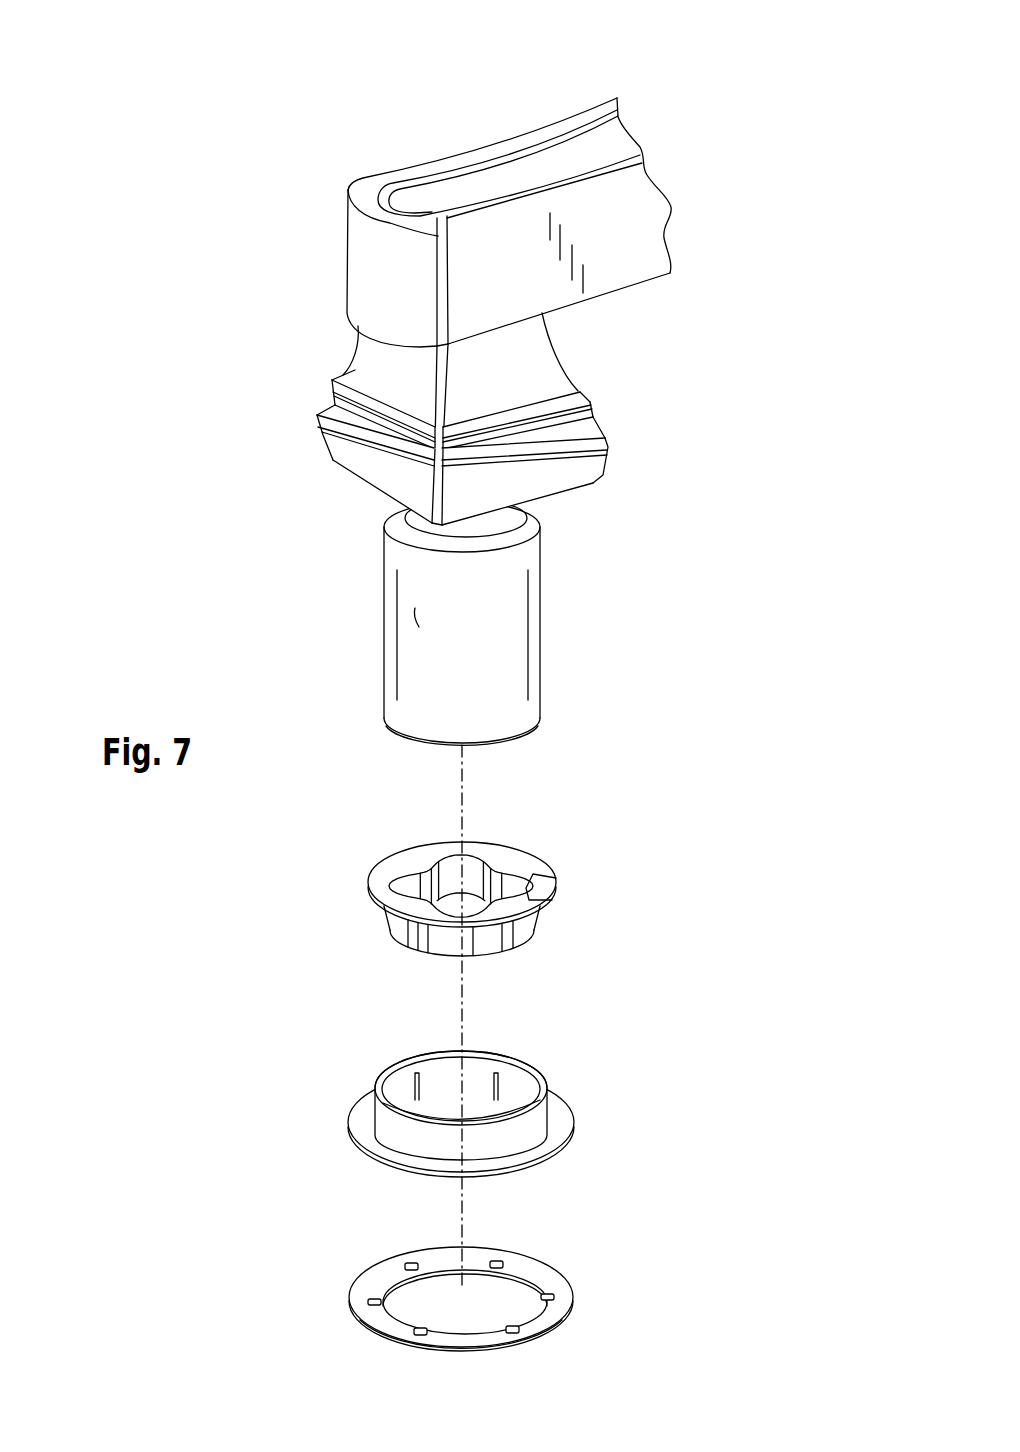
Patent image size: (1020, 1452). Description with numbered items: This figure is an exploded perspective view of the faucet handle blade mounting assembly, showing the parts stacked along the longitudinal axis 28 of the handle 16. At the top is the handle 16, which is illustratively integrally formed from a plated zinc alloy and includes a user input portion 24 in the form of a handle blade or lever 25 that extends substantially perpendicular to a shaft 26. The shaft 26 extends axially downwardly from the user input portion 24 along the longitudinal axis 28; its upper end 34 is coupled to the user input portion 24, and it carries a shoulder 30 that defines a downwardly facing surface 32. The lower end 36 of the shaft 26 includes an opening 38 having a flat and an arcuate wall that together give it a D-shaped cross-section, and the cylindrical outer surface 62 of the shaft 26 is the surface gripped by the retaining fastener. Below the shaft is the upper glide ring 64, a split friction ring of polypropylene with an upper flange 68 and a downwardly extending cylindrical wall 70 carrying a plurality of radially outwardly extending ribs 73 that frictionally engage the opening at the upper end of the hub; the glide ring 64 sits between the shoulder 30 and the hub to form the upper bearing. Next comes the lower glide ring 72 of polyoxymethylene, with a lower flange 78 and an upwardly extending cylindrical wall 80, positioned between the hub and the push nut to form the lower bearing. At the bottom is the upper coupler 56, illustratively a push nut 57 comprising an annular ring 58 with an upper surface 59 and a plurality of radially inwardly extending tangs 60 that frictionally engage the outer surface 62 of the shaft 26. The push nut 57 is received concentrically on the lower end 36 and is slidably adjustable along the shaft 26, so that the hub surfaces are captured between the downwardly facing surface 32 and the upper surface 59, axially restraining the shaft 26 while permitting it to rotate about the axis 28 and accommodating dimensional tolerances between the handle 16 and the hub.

The handle 16 is at (550, 112).
The user input portion 24 is at (620, 142).
The handle blade or lever 25 is at (647, 227).
The upper end 34 is at (342, 351).
The shoulder 30 is at (607, 445).
The downwardly facing surface 32 is at (567, 492).
The shaft 26 is at (383, 548).
The lower end 36 is at (565, 697).
The outer surface 62 is at (412, 618).
The opening 38 is at (389, 745).
The longitudinal axis 28 is at (462, 783).
The upper glide ring 64 is at (575, 877).
The upper flange 68 is at (383, 873).
The cylindrical wall 70 is at (523, 943).
The ribs 73 is at (437, 942).
The lower glide ring 72 is at (337, 1120).
The lower flange 78 is at (572, 1138).
The cylindrical wall 80 is at (535, 1063).
The upper coupler 56 is at (580, 1279).
The annular ring 58 is at (348, 1305).
The push nut 57 is at (377, 1333).
The upper surface 59 is at (545, 1312).
The tangs 60 is at (450, 1333).